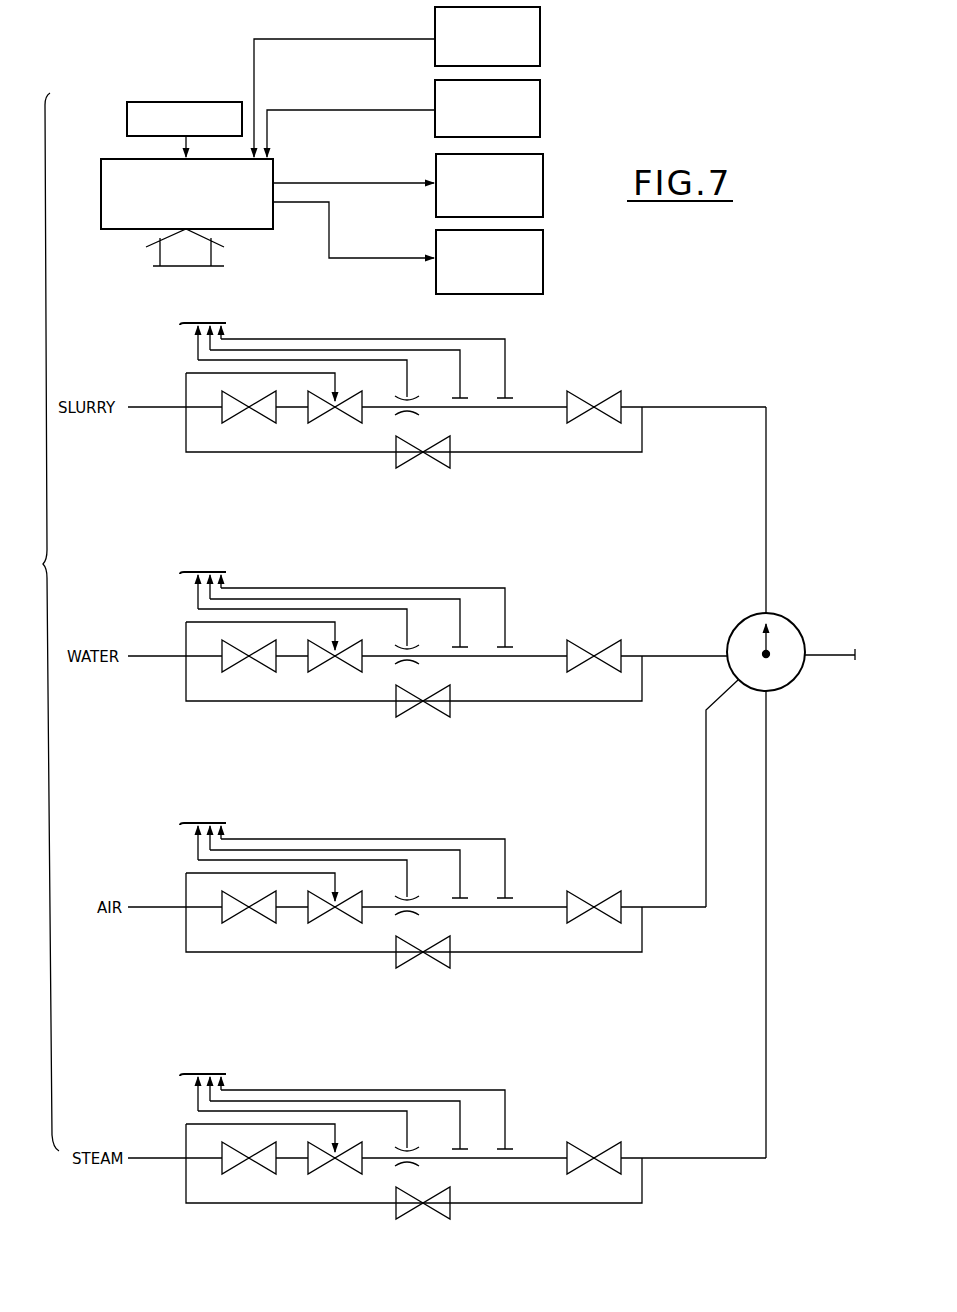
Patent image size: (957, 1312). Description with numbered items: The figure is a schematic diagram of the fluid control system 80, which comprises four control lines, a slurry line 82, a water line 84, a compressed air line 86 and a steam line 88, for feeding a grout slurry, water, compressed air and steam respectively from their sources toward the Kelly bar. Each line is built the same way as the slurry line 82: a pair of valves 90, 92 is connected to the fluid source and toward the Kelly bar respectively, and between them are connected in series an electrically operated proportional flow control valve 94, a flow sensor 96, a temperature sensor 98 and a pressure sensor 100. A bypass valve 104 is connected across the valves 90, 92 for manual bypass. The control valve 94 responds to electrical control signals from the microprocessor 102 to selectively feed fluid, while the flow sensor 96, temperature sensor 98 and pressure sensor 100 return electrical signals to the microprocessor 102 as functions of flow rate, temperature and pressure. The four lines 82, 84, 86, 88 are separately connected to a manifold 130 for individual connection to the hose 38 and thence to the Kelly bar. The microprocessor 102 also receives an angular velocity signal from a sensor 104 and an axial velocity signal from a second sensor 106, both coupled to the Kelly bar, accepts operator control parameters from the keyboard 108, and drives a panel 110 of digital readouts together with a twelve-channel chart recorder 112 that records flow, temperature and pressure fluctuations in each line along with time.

The hose 38 is at (822, 648).
The fluid control system 80 is at (655, 306).
The slurry line 82 is at (158, 474).
The water line 84 is at (162, 726).
The compressed air line 86 is at (168, 970).
The steam line 88 is at (152, 1216).
The valve 90 is at (253, 410).
The valve 92 is at (618, 393).
The proportional flow control valve 94 is at (318, 416).
The flow sensor 96 is at (412, 413).
The temperature sensor 98 is at (463, 401).
The pressure sensor 100 is at (511, 401).
The microprocessor 102 is at (132, 232).
The bypass valve / angular velocity sensor 104 is at (544, 47).
The axial velocity sensor 106 is at (542, 107).
The operator keyboard 108 is at (167, 100).
The panel of digital readouts 110 is at (551, 171).
The chart recorder 112 is at (552, 261).
The manifold 130 is at (738, 620).